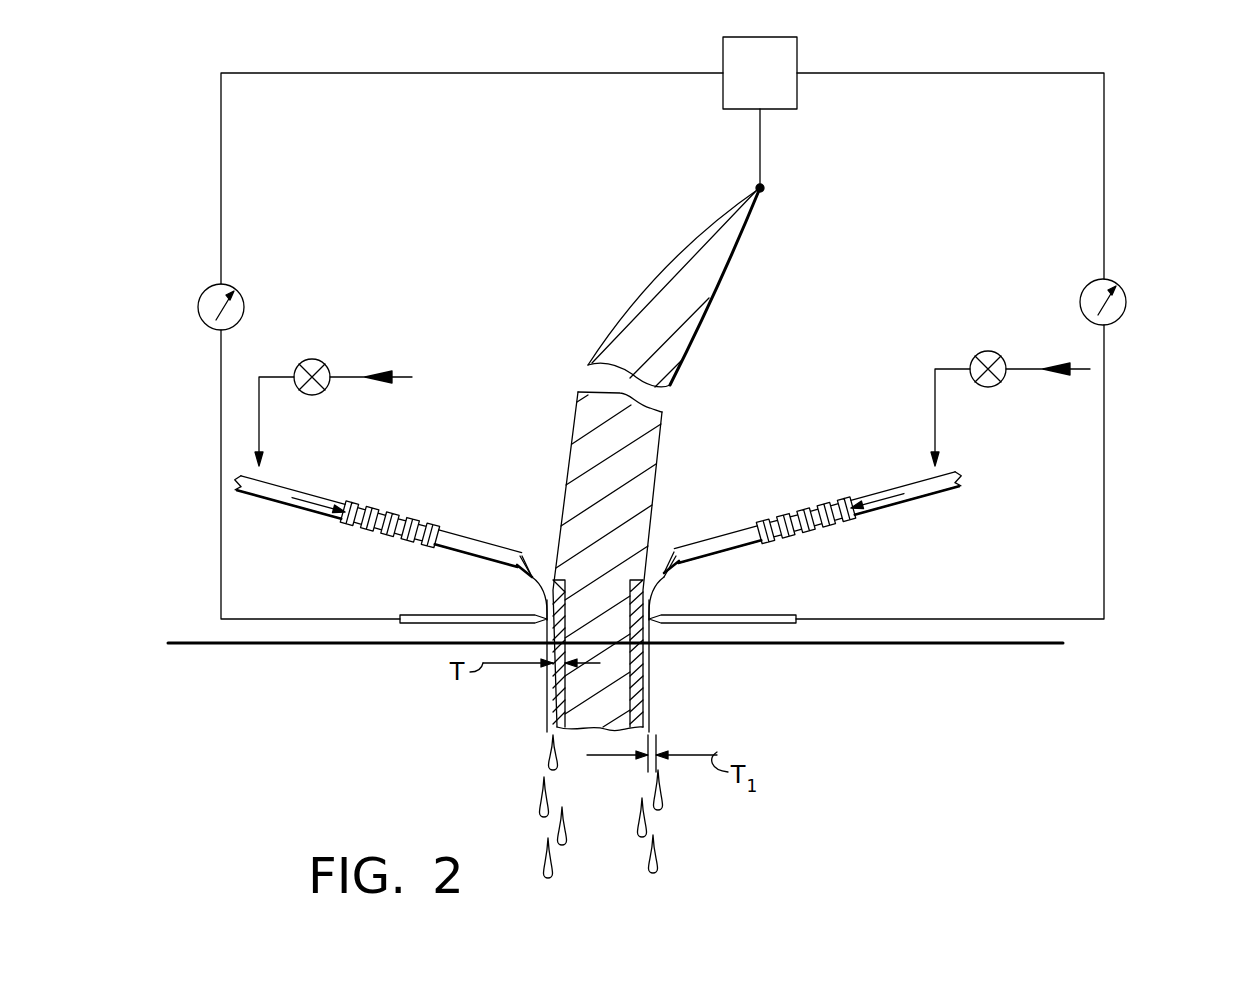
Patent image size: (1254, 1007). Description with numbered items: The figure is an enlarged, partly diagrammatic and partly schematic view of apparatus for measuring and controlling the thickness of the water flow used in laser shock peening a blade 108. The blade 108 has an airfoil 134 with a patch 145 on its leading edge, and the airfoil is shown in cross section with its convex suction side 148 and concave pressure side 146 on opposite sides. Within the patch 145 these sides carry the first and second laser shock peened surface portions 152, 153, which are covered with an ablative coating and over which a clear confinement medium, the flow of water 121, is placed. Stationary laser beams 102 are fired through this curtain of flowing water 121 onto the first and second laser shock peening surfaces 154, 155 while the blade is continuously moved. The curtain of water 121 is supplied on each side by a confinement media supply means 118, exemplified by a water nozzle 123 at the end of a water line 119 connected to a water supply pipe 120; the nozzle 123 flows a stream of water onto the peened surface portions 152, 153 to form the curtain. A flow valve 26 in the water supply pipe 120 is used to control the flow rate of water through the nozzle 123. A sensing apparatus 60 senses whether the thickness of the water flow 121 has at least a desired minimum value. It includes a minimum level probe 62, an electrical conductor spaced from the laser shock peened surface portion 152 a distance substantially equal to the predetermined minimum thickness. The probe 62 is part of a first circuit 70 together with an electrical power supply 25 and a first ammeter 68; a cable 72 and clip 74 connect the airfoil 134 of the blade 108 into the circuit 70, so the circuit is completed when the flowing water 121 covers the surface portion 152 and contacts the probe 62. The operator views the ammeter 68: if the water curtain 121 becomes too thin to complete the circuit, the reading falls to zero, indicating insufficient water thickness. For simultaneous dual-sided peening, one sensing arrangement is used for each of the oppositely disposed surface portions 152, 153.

The electrical power supply 25 is at (747, 85).
The cable 72 is at (762, 165).
The clip 74 is at (766, 188).
The first ammeter 68 is at (1124, 302).
The first circuit 70 is at (1116, 500).
The water supply pipe 120 is at (347, 375).
The water line 119 is at (262, 412).
The flow valve 26 is at (1003, 380).
The sensing apparatus 60 is at (1004, 471).
The confinement media supply means 118 is at (340, 471).
The blade 108 is at (566, 423).
The convex suction side 148 is at (560, 478).
The concave pressure side 146 is at (652, 487).
The airfoil 134 is at (622, 406).
The water nozzle 123 is at (475, 540).
The flow of water 121 is at (546, 605).
The minimum level probe 62 is at (418, 614).
The laser beam 102 is at (216, 646).
The patch 145 is at (640, 665).
The second laser shock peened surface portion 153 is at (555, 705).
The first laser shock peened surface portion 152 is at (655, 697).
The second laser shock peening surface 155 is at (548, 683).
The first laser shock peening surface 154 is at (650, 655).